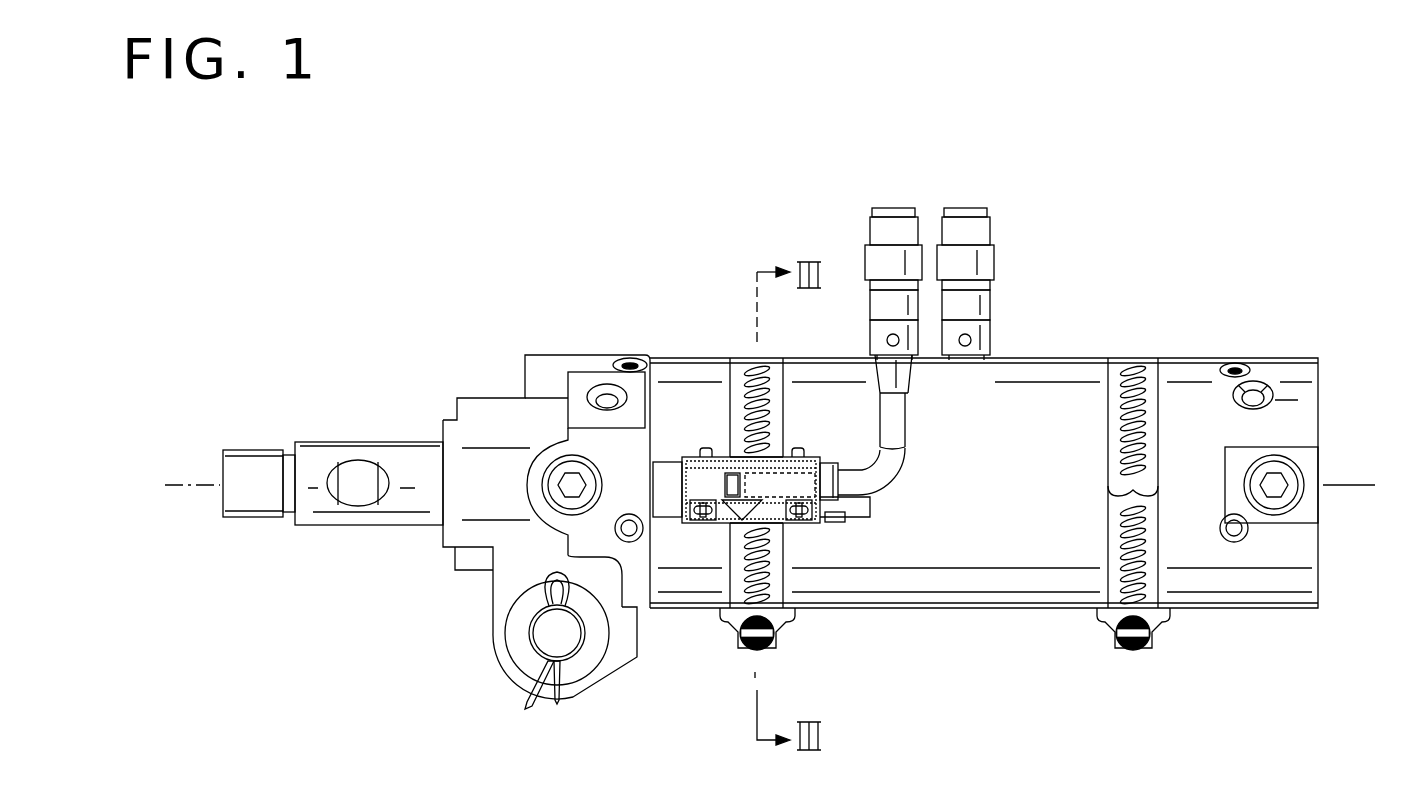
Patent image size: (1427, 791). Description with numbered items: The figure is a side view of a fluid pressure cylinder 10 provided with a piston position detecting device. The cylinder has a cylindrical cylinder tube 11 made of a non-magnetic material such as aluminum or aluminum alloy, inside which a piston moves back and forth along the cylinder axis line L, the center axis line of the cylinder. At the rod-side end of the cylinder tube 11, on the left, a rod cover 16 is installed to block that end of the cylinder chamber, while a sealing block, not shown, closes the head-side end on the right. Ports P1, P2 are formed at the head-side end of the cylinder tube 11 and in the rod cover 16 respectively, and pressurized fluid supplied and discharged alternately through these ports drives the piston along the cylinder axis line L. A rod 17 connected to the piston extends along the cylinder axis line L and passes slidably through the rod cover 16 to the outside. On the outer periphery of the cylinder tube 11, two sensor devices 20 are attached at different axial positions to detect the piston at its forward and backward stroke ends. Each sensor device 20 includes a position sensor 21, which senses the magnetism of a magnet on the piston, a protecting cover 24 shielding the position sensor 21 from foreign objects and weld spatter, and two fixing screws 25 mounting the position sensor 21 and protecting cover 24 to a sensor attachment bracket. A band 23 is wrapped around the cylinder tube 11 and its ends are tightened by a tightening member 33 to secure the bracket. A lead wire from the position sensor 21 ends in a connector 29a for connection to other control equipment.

The fluid pressure cylinder 10 is at (1078, 290).
The cylinder tube 11 is at (950, 577).
The rod cover 16 is at (510, 408).
The rod 17 is at (358, 450).
The sensor device 20 is at (745, 352).
The position sensor 21 is at (697, 540).
The band 23 is at (775, 572).
The protecting cover 24 is at (700, 540).
The fixing screw 25 is at (800, 448).
The connector 29a is at (893, 225).
The tightening member 33 is at (755, 652).
The port P1 is at (1242, 358).
The port P2 is at (637, 357).
The cylinder axis line L is at (782, 483).